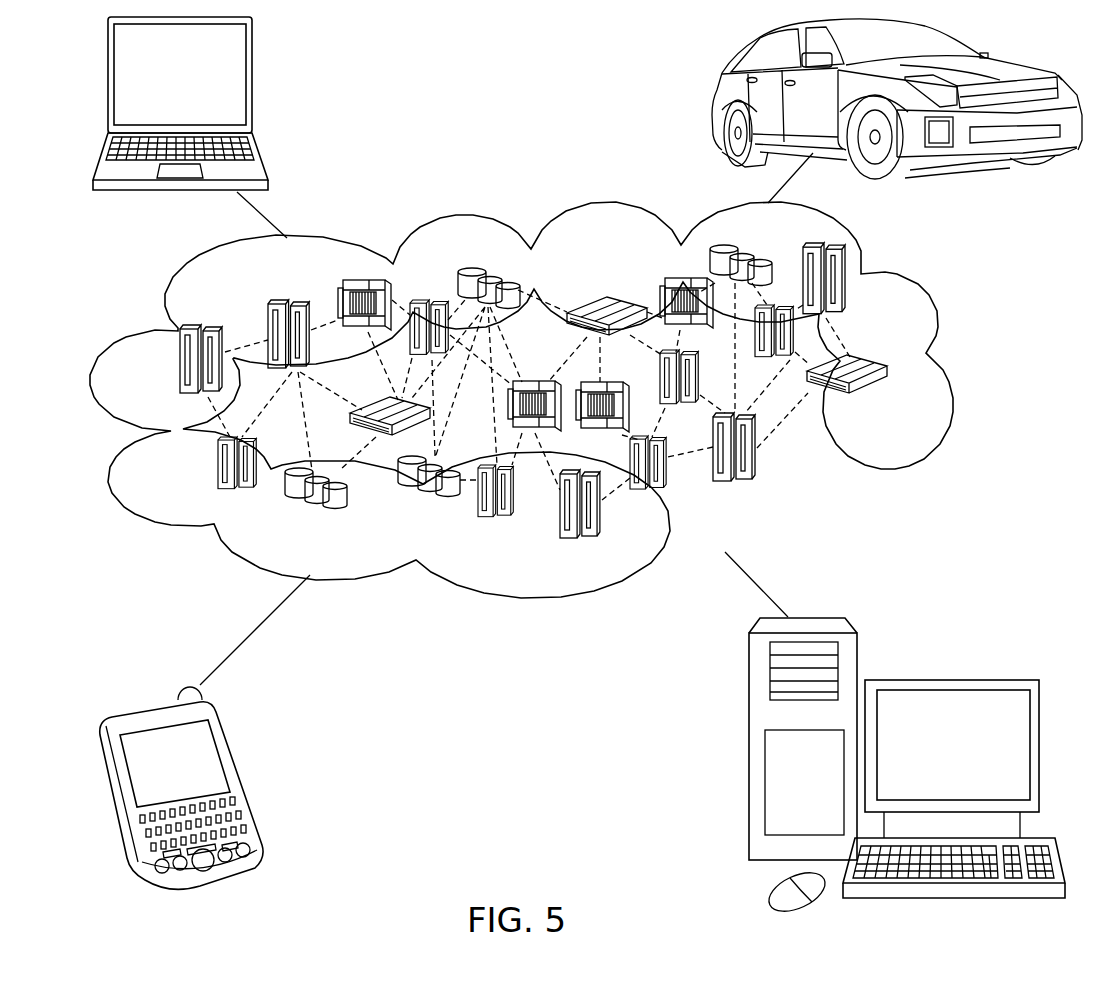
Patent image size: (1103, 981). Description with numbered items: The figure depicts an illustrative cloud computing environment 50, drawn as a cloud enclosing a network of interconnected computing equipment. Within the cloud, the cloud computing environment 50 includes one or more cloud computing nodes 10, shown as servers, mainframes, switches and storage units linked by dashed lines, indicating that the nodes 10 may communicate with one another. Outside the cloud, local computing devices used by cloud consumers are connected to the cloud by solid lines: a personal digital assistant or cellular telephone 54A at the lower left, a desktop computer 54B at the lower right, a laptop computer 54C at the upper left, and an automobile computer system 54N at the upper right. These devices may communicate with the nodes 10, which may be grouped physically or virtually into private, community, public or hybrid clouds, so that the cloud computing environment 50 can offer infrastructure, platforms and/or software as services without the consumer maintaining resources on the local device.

The cloud computing node 10 is at (892, 406).
The cloud computing environment 50 is at (551, 400).
The personal digital assistant or cellular telephone 54A is at (244, 778).
The desktop computer 54B is at (948, 678).
The laptop computer 54C is at (253, 82).
The automobile computer system 54N is at (718, 99).